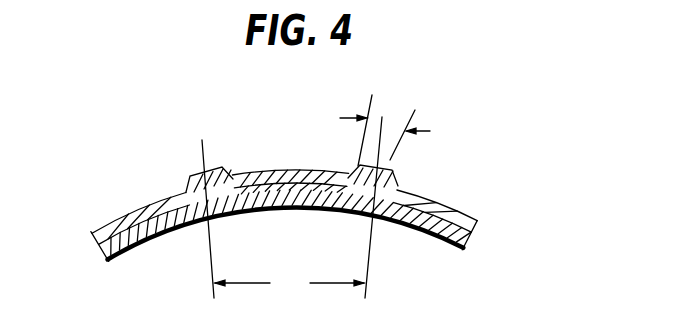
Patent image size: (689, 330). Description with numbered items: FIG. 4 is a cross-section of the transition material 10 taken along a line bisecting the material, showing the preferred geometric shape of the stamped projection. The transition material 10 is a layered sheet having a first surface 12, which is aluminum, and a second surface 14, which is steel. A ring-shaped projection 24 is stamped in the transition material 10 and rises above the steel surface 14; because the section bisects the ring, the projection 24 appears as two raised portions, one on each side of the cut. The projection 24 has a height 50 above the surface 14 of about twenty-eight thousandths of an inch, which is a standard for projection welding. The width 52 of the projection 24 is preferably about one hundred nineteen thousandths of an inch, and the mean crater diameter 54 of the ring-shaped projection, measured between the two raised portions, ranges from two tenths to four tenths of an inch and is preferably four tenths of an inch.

The transition material 10 is at (302, 207).
The first surface 12 is at (136, 250).
The second surface 14 is at (105, 222).
The projection 24 is at (189, 176).
The height 50 is at (260, 230).
The width 52 is at (382, 117).
The mean crater diameter 54 is at (283, 221).